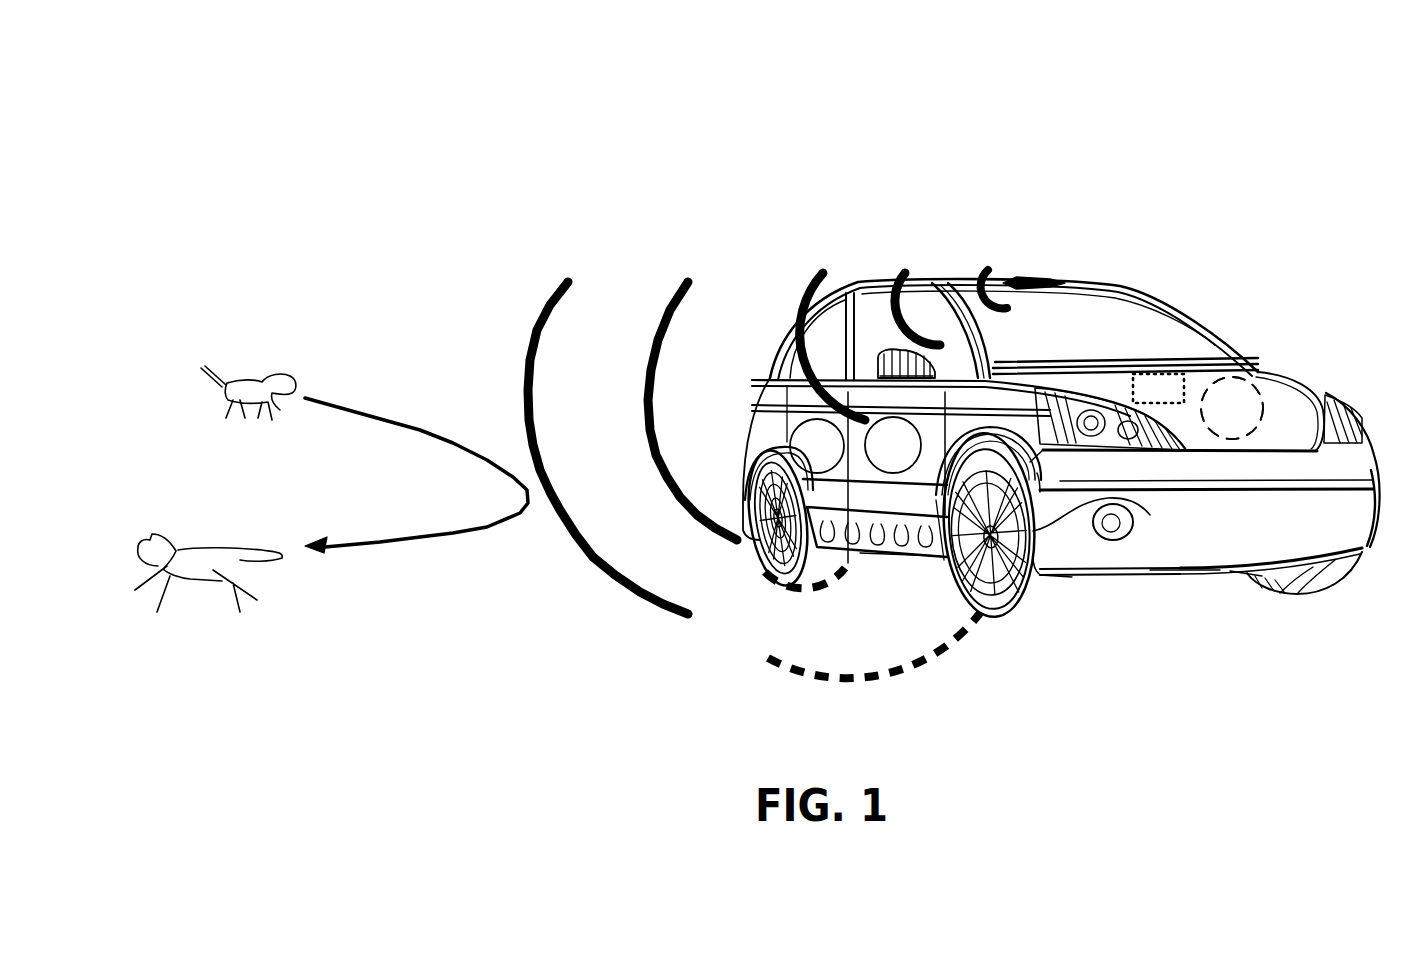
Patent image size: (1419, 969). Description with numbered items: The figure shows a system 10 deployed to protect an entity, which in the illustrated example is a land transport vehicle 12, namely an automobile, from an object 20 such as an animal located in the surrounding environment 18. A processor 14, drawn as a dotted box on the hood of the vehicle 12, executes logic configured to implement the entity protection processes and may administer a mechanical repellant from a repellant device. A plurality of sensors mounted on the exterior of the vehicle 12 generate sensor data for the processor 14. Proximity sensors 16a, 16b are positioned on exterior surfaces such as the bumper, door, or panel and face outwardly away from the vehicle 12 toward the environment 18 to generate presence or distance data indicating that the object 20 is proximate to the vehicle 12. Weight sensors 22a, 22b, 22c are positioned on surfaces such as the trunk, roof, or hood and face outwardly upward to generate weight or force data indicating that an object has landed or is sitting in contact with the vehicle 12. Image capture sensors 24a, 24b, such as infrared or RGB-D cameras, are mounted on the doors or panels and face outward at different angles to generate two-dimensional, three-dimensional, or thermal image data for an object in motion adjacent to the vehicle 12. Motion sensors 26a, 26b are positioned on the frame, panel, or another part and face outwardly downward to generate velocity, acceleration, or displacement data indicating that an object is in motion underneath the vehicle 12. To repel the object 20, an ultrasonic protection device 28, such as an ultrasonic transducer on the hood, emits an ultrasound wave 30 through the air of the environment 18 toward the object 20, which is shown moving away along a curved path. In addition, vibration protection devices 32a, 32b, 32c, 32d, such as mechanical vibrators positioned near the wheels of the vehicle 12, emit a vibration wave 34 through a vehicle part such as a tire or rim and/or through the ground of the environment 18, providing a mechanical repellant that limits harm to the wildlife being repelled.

The system 10 is at (998, 208).
The land transport vehicle 12 is at (1181, 302).
The processor 14 is at (1173, 401).
The proximity sensor 16a is at (884, 358).
The proximity sensor 16b is at (1253, 378).
The environment 18 is at (836, 148).
The object 20 is at (268, 385).
The weight sensor 22a is at (1254, 388).
The weight sensor 22b is at (977, 292).
The weight sensor 22c is at (770, 382).
The image capture sensor 24a is at (914, 457).
The image capture sensor 24b is at (838, 458).
The motion sensor 26a is at (1184, 572).
The motion sensor 26b is at (941, 563).
The ultrasonic protection device 28 is at (1052, 279).
The ultrasound wave 30 is at (603, 601).
The vibration protection device 32a is at (1072, 577).
The vibration protection device 32b is at (1245, 568).
The vibration protection device 32c is at (857, 552).
The vibration protection device 32d is at (886, 556).
The vibration wave 34 is at (800, 691).